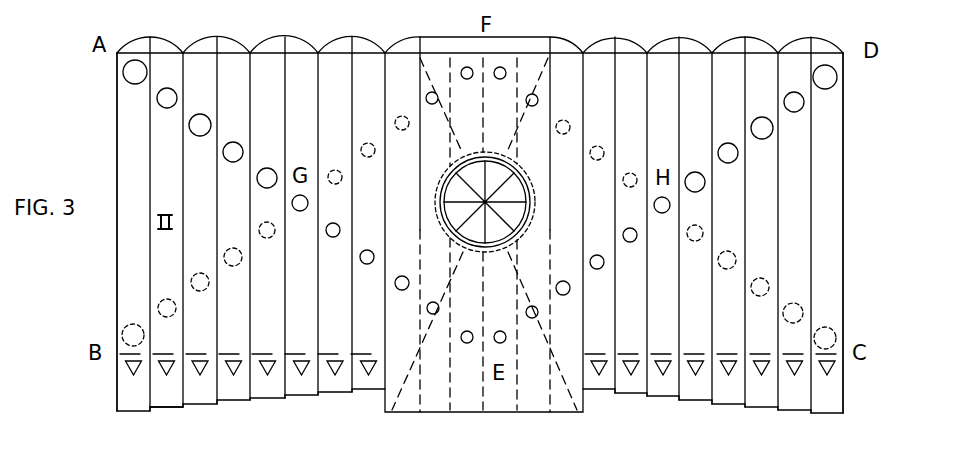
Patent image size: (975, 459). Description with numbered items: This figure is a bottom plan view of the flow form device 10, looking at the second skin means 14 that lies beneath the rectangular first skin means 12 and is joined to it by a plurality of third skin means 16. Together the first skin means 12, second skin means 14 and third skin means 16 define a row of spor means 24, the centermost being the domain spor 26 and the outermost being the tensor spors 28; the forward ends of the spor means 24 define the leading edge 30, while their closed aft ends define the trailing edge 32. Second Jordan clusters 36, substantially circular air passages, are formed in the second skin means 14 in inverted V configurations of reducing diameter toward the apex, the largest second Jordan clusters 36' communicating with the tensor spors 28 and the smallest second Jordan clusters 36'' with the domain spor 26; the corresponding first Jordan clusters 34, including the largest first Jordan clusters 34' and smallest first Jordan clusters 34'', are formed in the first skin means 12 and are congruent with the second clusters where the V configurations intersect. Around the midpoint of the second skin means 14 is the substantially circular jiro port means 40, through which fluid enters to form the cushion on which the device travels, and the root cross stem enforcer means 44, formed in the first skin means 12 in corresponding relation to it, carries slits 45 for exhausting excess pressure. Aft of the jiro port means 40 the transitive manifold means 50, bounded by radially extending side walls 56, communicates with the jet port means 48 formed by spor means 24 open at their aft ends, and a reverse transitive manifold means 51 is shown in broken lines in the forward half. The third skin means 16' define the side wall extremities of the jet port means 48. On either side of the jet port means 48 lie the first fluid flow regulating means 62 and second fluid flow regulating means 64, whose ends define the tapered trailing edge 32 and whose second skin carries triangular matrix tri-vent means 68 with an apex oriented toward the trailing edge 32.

The flow form device 10 is at (577, 29).
The first skin means 12 is at (793, 10).
The second skin means 14 is at (274, 97).
The third skin means 16 is at (498, 106).
The third skin means defining side wall extremities of jet port means 16' is at (485, 234).
The spor means 24 is at (160, 243).
The domain spor 26 is at (440, 72).
The tensor spors 28 is at (134, 144).
The leading edge 30 is at (205, 38).
The trailing edge 32 is at (258, 402).
The first Jordan clusters 34 is at (480, 219).
The largest first Jordan clusters 34' is at (476, 328).
The smallest first Jordan clusters 34'' is at (507, 40).
The second Jordan clusters 36 is at (480, 203).
The largest second Jordan clusters 36' is at (476, 78).
The smallest second Jordan clusters 36'' is at (479, 354).
The jiro port means 40 is at (432, 202).
The root cross stem enforcer means 44 is at (530, 198).
The slits 45 is at (510, 218).
The jet port means 48 is at (465, 394).
The transitive manifold means 50 is at (461, 279).
The reverse transitive manifold means 51 is at (460, 128).
The side walls 56 is at (520, 286).
The first fluid flow regulating means 62 is at (160, 423).
The second fluid flow regulating means 64 is at (653, 413).
The matrix tri-vent means 68 is at (233, 377).